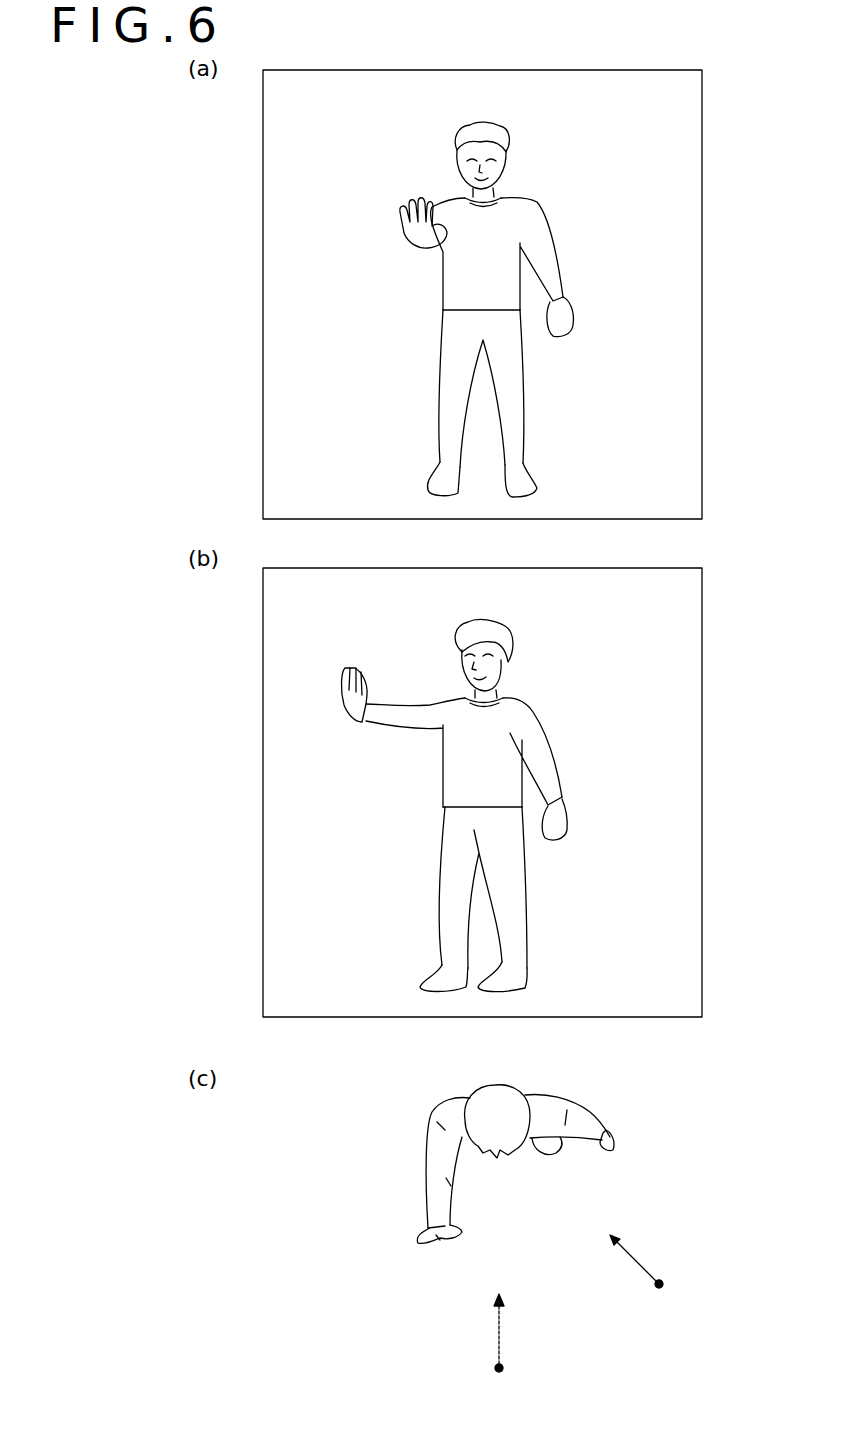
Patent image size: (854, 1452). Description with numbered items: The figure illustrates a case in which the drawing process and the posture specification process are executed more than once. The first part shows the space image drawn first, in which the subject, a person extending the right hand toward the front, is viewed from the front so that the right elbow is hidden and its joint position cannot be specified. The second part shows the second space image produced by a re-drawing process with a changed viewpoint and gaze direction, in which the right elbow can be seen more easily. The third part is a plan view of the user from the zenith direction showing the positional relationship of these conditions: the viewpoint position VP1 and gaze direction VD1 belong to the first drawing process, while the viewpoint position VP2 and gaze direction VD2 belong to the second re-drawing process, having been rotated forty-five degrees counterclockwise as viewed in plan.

The viewpoint position VP1 is at (505, 1368).
The gaze direction VD1 is at (502, 1328).
The viewpoint position VP2 is at (665, 1285).
The gaze direction VD2 is at (636, 1257).